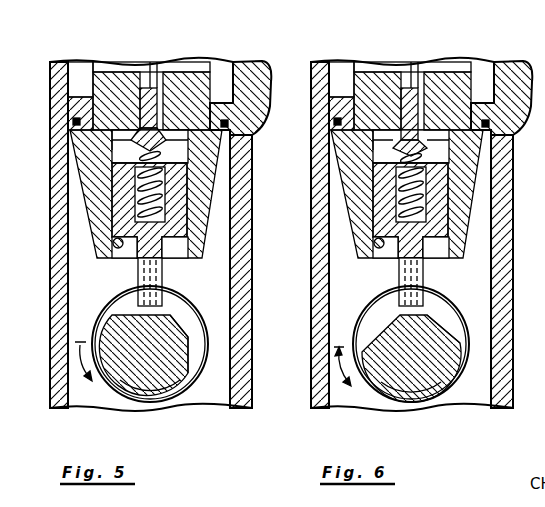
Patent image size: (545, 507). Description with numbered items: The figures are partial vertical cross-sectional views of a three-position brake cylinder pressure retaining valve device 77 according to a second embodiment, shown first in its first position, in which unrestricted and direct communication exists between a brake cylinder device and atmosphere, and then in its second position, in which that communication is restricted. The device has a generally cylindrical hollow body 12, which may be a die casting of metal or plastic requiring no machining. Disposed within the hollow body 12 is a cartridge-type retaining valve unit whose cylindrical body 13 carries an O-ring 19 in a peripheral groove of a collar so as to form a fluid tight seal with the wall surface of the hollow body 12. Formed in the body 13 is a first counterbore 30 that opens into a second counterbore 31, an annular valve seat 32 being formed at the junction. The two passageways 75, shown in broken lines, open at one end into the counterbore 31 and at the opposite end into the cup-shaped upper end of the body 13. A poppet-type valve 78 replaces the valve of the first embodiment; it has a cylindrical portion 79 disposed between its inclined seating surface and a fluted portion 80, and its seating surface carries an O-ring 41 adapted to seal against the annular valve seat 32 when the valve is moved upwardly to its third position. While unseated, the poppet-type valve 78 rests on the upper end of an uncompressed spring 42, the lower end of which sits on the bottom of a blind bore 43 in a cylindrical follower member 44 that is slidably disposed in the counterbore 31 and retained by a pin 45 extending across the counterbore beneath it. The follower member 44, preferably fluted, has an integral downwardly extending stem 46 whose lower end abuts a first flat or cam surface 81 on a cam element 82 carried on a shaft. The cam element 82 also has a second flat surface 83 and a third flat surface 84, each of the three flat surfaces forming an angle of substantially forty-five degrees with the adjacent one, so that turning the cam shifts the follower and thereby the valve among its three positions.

In FIG. 5, the hollow body 12 is at (62, 162).
In FIG. 6, the hollow body 12 is at (405, 234).
In FIG. 5, the cylindrical body 13 is at (97, 174).
In FIG. 6, the cylindrical body 13 is at (382, 194).
In FIG. 5, the O-ring 19 is at (73, 120).
In FIG. 6, the O-ring 19 is at (384, 113).
In FIG. 5, the first counterbore 30 is at (150, 62).
In FIG. 6, the first counterbore 30 is at (403, 62).
In FIG. 5, the second counterbore 31 is at (200, 160).
In FIG. 6, the second counterbore 31 is at (456, 158).
In FIG. 5, the annular valve seat 32 is at (110, 131).
In FIG. 6, the annular valve seat 32 is at (326, 140).
In FIG. 5, the O-ring 41 is at (190, 146).
In FIG. 6, the O-ring 41 is at (456, 155).
In FIG. 5, the spring 42 is at (165, 206).
In FIG. 6, the spring 42 is at (468, 212).
In FIG. 5, the blind bore 43 is at (50, 206).
In FIG. 6, the blind bore 43 is at (296, 220).
In FIG. 5, the cylindrical follower member 44 is at (176, 201).
In FIG. 6, the cylindrical follower member 44 is at (457, 210).
In FIG. 5, the pin 45 is at (118, 249).
In FIG. 6, the pin 45 is at (403, 258).
In FIG. 5, the stem 46 is at (150, 278).
In FIG. 6, the stem 46 is at (425, 282).
In FIG. 5, the passageways 75 is at (188, 92).
In FIG. 6, the passageways 75 is at (417, 83).
In FIG. 5, the three-position brake cylinder pressure retaining valve device 77 is at (49, 250).
In FIG. 6, the three-position brake cylinder pressure retaining valve device 77 is at (296, 248).
In FIG. 5, the poppet-type valve 78 is at (113, 144).
In FIG. 6, the poppet-type valve 78 is at (326, 154).
In FIG. 5, the cylindrical portion 79 is at (165, 135).
In FIG. 6, the cylindrical portion 79 is at (467, 145).
In FIG. 5, the fluted portion 80 is at (158, 92).
In FIG. 6, the fluted portion 80 is at (423, 88).
In FIG. 5, the first flat or cam surface 81 is at (122, 313).
In FIG. 6, the first flat or cam surface 81 is at (404, 344).
In FIG. 5, the cam element 82 is at (157, 380).
In FIG. 6, the cam element 82 is at (426, 409).
In FIG. 5, the second flat surface 83 is at (173, 320).
In FIG. 6, the second flat surface 83 is at (415, 343).
In FIG. 5, the third flat surface 84 is at (189, 364).
In FIG. 6, the third flat surface 84 is at (462, 322).